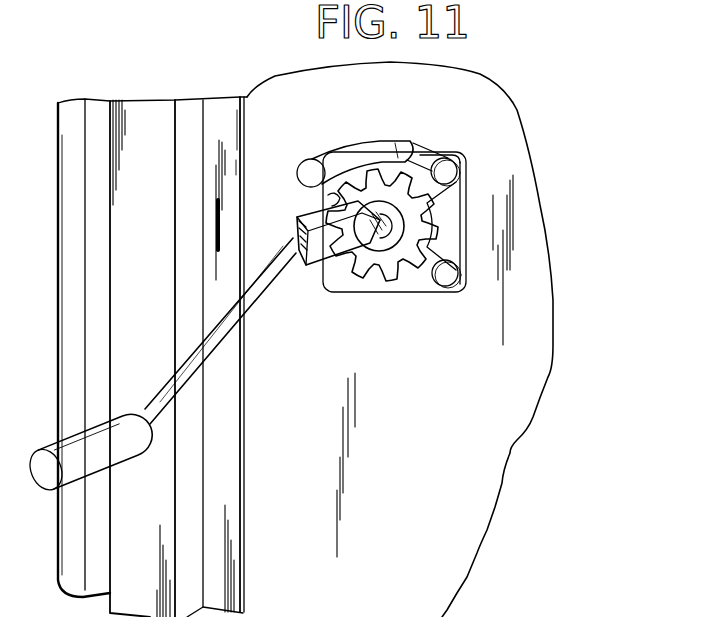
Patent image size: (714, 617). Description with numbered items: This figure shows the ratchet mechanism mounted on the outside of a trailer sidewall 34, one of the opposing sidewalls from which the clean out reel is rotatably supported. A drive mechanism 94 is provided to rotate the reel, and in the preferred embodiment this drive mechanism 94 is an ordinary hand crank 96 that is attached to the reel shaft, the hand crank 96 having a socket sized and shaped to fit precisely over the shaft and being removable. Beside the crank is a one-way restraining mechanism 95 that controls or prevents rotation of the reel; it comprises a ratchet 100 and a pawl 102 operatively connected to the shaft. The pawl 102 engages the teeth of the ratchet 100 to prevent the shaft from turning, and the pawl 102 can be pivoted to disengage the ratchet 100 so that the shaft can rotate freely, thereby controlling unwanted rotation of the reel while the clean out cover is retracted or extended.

The sidewall 34 is at (506, 98).
The drive mechanism 94 is at (553, 178).
The one-way restraining mechanism 95 is at (475, 161).
The hand crank 96 is at (272, 288).
The ratchet 100 is at (396, 293).
The pawl 102 is at (342, 141).